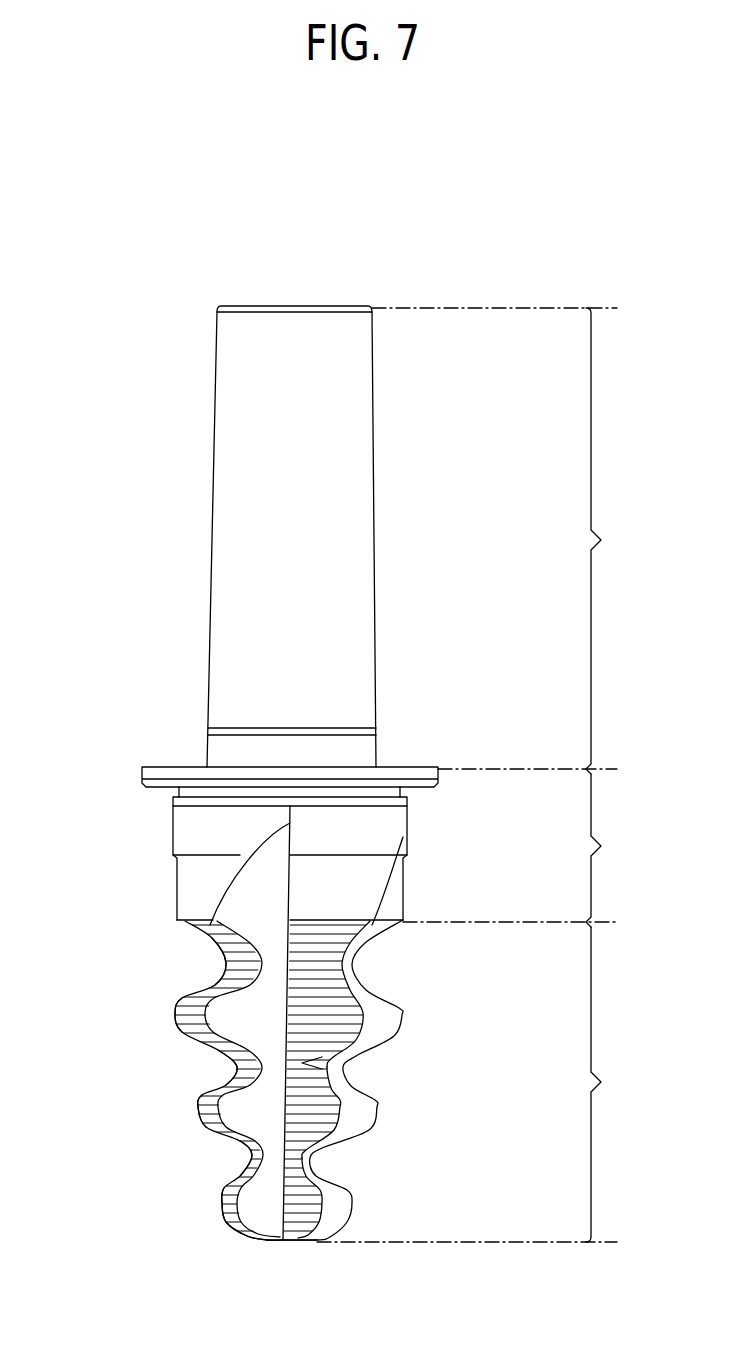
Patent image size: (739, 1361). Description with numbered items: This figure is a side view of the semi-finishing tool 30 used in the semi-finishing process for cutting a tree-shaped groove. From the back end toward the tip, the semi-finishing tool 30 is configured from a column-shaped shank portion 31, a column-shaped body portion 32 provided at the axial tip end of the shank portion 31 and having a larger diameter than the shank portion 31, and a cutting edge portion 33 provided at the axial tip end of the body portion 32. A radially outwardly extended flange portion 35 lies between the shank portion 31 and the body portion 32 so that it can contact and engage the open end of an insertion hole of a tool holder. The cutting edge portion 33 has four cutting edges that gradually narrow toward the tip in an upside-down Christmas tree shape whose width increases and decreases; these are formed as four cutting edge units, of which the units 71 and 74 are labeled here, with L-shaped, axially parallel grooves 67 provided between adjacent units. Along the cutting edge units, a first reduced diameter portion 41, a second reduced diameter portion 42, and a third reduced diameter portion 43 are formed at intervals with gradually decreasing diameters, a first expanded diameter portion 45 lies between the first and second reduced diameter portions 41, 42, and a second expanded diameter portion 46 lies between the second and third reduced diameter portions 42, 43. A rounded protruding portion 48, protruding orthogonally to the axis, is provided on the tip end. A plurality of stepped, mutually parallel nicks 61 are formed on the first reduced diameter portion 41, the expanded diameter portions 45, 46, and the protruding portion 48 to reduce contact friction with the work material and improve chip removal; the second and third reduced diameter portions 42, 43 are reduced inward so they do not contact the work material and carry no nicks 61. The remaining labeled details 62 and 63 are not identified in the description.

The semi-finishing tool 30 is at (333, 252).
The shank portion 31 is at (419, 540).
The body portion 32 is at (400, 1007).
The cutting edge portion 33 is at (355, 1112).
The flange portion 35 is at (157, 762).
The first reduced diameter portion 41 is at (200, 971).
The second reduced diameter portion 42 is at (210, 1071).
The third reduced diameter portion 43 is at (233, 1163).
The first expanded diameter portion 45 is at (151, 1020).
The second expanded diameter portion 46 is at (171, 1113).
The protruding portion 48 is at (198, 1209).
The nicks 61 is at (313, 995).
The second core portion 62 is at (307, 1112).
The third core portion 63 is at (300, 1212).
The grooves 67 is at (267, 903).
The cutting edge unit 71 is at (303, 1257).
The cutting edge unit 74 is at (233, 1252).